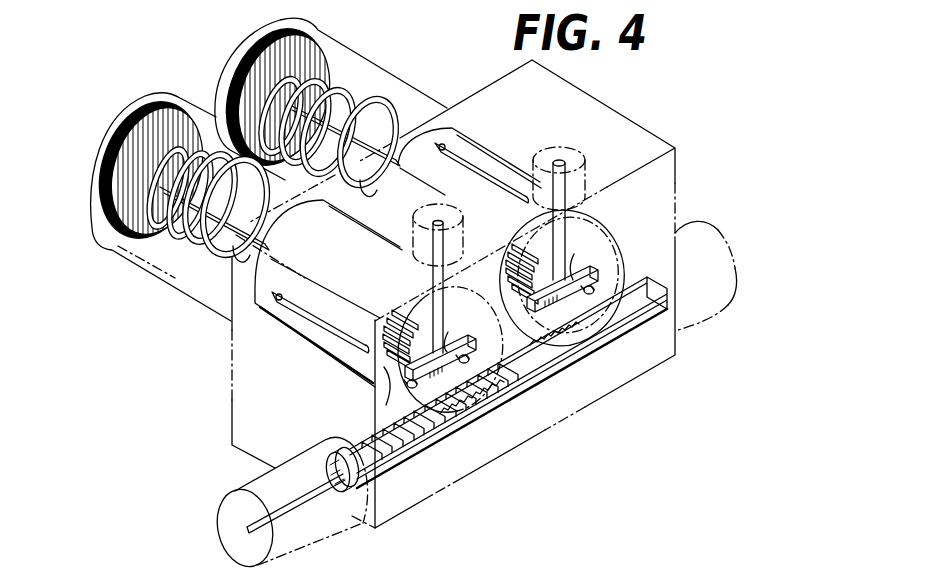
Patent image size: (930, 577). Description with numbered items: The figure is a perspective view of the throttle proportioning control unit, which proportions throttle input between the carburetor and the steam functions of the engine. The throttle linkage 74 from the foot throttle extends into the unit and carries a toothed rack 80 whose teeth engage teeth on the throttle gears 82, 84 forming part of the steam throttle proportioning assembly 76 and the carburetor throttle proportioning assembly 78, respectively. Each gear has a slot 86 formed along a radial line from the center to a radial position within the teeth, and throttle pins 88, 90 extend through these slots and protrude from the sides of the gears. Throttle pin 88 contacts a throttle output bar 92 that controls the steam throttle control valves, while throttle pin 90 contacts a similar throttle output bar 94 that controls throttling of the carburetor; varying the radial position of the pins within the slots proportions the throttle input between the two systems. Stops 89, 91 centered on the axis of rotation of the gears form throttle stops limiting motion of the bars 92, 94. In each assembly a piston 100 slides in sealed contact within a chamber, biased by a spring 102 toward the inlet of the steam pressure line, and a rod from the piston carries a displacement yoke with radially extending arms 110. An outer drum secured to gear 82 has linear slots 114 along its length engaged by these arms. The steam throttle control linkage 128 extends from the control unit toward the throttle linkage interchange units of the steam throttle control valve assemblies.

The throttle linkage 74 is at (316, 532).
The steam throttle proportioning assembly 76 is at (152, 285).
The carburetor throttle proportioning assembly 78 is at (381, 60).
The toothed rack 80 is at (441, 432).
The throttle gear 82 is at (377, 388).
The throttle gear 84 is at (620, 225).
The slot 86 is at (386, 405).
The throttle pin 88 is at (420, 383).
The stop 89 is at (460, 367).
The throttle pin 90 is at (562, 298).
The stop 91 is at (614, 263).
The throttle output bar 92 is at (448, 332).
The throttle output bar 94 is at (574, 254).
The piston 100 is at (108, 170).
The biasing spring 102 is at (203, 256).
The radially extending arms 110 is at (273, 326).
The linear slots 114 is at (316, 328).
The steam throttle control linkage 128 is at (468, 236).